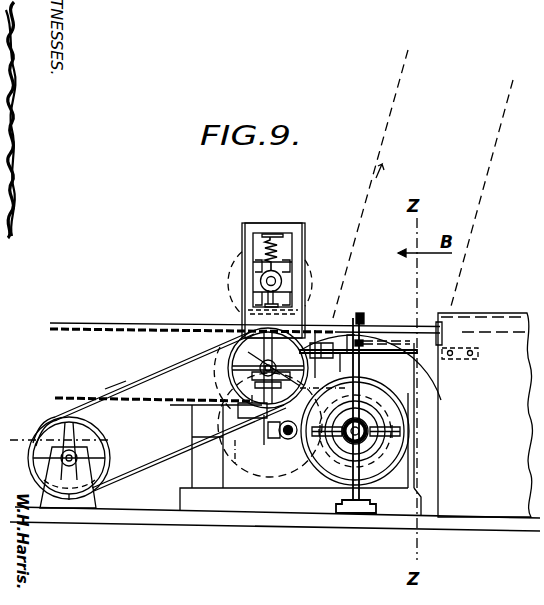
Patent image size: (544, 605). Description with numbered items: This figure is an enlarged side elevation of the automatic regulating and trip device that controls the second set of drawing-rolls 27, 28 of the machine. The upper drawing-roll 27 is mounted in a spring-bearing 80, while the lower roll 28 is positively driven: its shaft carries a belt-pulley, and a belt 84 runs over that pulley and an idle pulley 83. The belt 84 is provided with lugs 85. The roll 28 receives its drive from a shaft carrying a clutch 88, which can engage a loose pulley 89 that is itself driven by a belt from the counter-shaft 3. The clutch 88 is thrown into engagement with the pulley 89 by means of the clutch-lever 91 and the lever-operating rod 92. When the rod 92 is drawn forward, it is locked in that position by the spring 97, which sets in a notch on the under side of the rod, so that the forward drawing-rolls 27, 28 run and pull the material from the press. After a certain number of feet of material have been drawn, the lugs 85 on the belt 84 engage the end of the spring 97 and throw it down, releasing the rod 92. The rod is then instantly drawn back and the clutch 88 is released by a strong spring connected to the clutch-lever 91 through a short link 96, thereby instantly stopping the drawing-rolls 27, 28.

The frame arm 3 is at (398, 325).
The drawing-roll 27 is at (239, 263).
The drawing-roll 28 is at (210, 306).
The spring-bearings 80 is at (289, 283).
The idle pulley 83 is at (106, 443).
The belt 84 is at (186, 447).
The lugs 85 is at (204, 345).
The clutch 88 is at (368, 427).
The loose pulley 89 is at (403, 431).
The clutch-lever 91 is at (338, 392).
The lever-operating rod 92 is at (399, 326).
The short link 96 is at (362, 313).
The spring 97 is at (336, 325).